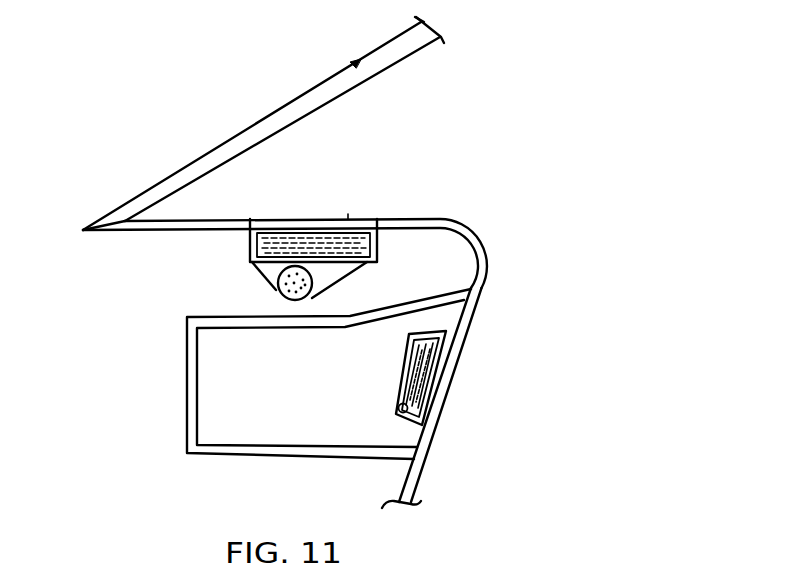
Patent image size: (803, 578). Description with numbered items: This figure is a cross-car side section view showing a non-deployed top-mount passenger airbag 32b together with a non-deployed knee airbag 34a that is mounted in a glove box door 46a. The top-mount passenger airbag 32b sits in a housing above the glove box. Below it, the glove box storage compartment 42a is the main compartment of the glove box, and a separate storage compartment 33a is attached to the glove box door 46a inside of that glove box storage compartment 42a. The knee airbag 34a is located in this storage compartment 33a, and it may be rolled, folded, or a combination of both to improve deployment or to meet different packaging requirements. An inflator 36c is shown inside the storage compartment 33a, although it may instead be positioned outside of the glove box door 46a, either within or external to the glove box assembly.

The second cleaning pad 32b is at (283, 228).
The side wall 33a is at (478, 313).
The pad holder 34a is at (453, 355).
The absorbent pad 46a is at (433, 387).
The pivot pin 36c is at (422, 423).
The reservoir 42a is at (318, 404).